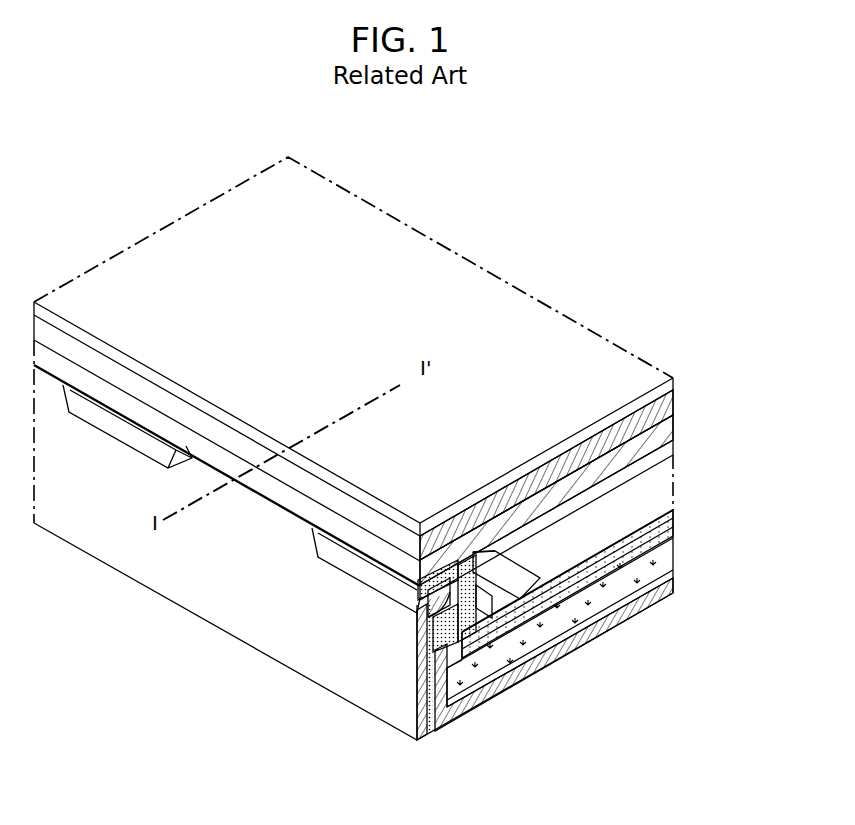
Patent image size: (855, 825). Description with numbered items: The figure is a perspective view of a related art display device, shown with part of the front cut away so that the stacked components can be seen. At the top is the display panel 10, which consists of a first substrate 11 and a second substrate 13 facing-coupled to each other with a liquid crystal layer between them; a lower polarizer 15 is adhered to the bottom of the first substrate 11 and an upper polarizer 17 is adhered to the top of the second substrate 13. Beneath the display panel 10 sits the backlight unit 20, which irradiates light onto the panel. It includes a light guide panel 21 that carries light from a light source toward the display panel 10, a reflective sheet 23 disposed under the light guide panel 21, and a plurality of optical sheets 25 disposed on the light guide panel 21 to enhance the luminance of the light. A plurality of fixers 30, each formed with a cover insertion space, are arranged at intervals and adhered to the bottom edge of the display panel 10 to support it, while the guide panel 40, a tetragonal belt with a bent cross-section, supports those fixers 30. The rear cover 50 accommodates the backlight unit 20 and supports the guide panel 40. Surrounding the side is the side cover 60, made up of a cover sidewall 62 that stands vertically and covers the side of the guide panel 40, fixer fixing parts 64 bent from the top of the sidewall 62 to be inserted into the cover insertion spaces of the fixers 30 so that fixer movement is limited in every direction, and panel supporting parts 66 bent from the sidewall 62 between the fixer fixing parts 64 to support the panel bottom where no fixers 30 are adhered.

The display panel 10 is at (758, 358).
The first substrate 11 is at (673, 405).
The second substrate 13 is at (673, 428).
The lower polarizer 15 is at (673, 450).
The upper polarizer 17 is at (673, 384).
The backlight unit 20 is at (752, 484).
The light guide panel 21 is at (673, 553).
The reflective sheet 23 is at (673, 578).
The optical sheets 25 is at (673, 532).
The fixer 30 is at (500, 603).
The guide panel 40 is at (525, 570).
The rear cover 50 is at (487, 700).
The side cover 60 is at (258, 740).
The cover sidewall 62 is at (251, 608).
The fixer fixing part 64 is at (437, 617).
The panel supporting part 66 is at (255, 510).